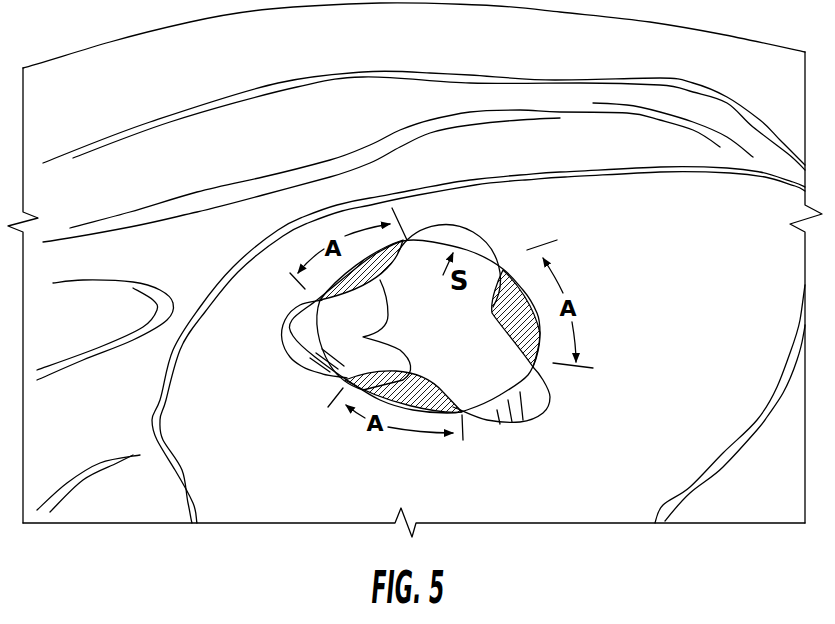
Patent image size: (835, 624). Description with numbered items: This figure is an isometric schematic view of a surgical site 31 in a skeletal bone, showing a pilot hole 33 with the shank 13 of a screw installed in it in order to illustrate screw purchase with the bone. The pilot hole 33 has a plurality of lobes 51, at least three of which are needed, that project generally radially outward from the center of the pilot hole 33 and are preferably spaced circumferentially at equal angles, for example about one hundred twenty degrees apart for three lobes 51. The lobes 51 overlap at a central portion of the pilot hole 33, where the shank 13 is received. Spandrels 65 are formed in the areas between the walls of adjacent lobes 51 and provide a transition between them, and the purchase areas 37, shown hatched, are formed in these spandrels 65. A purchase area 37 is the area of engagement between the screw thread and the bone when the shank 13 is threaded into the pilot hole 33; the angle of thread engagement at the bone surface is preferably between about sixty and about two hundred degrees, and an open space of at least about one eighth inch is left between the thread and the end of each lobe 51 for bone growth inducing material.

The shank 13 is at (487, 365).
The surgical site 31 is at (297, 470).
The pilot hole 33 is at (518, 420).
The purchase areas 37 is at (320, 300).
The lobes 51 is at (485, 168).
The spandrels 65 is at (495, 313).